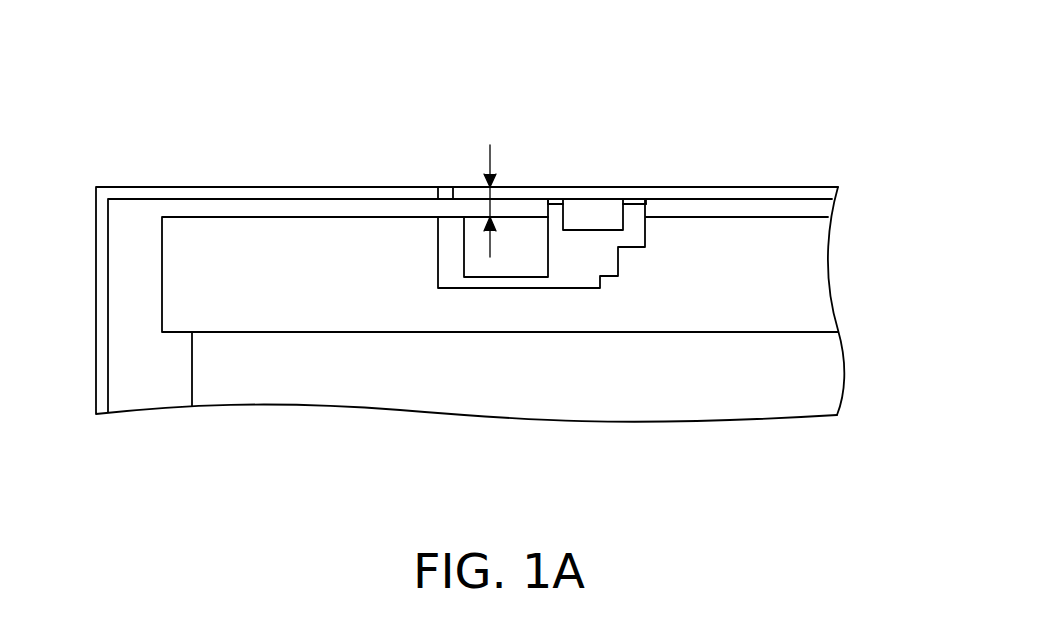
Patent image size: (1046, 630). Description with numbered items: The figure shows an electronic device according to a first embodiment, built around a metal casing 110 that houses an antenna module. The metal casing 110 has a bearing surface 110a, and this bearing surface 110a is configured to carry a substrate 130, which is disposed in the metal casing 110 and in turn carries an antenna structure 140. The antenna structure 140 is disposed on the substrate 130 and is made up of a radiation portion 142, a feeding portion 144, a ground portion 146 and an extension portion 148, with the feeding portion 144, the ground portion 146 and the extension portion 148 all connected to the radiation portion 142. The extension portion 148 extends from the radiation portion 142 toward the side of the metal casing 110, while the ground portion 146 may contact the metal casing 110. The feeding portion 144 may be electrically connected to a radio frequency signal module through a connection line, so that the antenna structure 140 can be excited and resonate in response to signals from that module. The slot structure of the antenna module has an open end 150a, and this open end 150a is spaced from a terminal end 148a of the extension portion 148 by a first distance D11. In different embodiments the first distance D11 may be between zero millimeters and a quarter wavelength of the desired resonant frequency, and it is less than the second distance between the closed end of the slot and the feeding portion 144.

The metal casing 110 is at (790, 205).
The bearing surface 110a is at (152, 385).
The substrate 130 is at (815, 252).
The antenna structure 140 is at (124, 5).
The radiation portion 142 is at (572, 260).
The feeding portion 144 is at (643, 187).
The ground portion 146 is at (555, 187).
The extension portion 148 is at (440, 278).
The terminal end 148a is at (441, 217).
The open end 150a is at (445, 192).
The first distance D11 is at (491, 213).